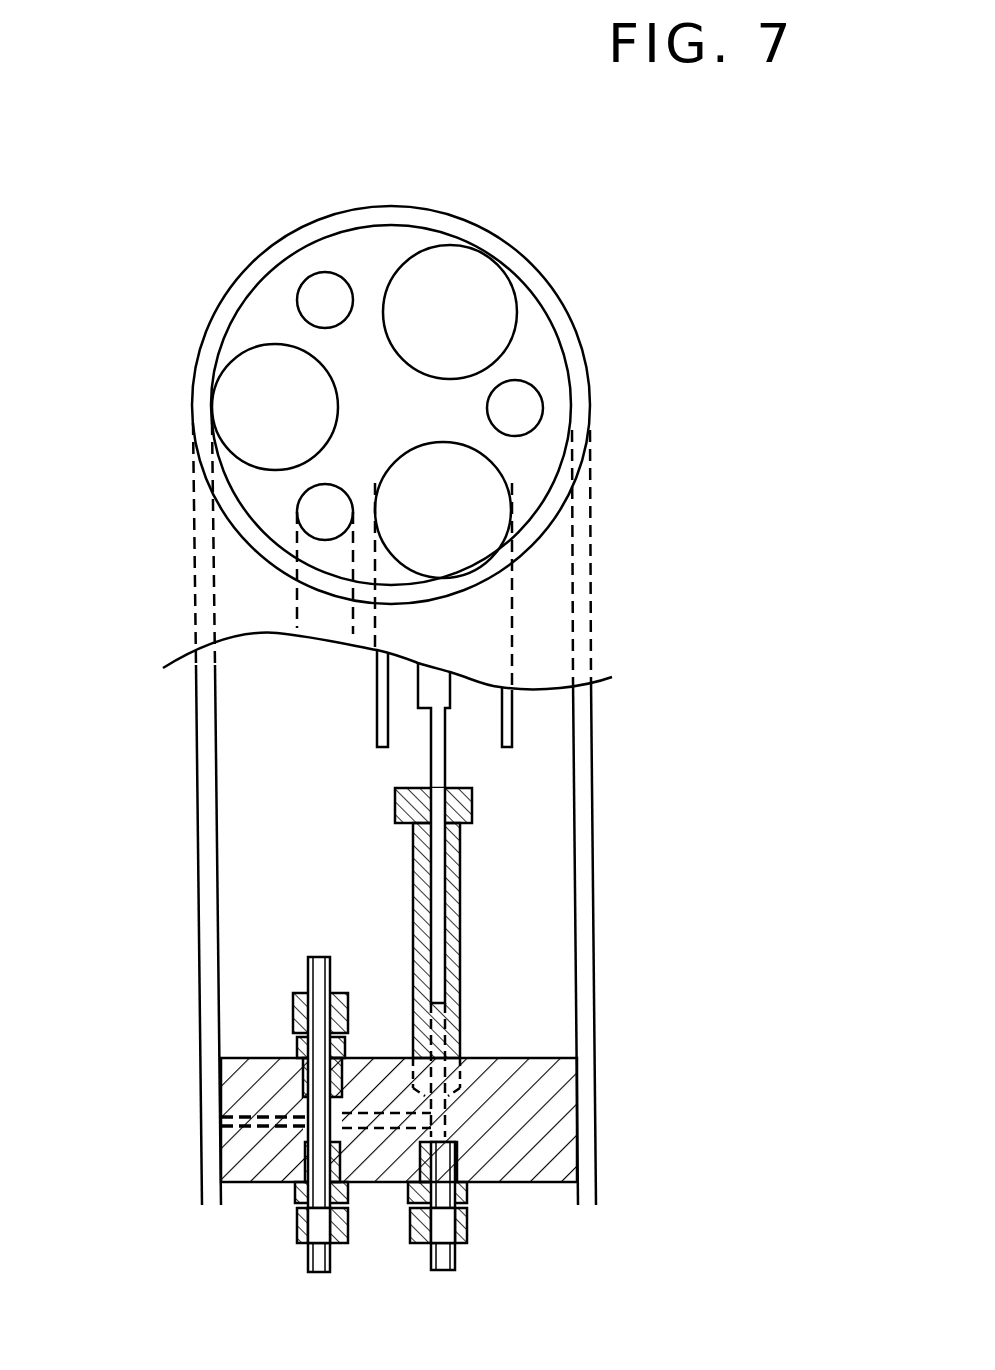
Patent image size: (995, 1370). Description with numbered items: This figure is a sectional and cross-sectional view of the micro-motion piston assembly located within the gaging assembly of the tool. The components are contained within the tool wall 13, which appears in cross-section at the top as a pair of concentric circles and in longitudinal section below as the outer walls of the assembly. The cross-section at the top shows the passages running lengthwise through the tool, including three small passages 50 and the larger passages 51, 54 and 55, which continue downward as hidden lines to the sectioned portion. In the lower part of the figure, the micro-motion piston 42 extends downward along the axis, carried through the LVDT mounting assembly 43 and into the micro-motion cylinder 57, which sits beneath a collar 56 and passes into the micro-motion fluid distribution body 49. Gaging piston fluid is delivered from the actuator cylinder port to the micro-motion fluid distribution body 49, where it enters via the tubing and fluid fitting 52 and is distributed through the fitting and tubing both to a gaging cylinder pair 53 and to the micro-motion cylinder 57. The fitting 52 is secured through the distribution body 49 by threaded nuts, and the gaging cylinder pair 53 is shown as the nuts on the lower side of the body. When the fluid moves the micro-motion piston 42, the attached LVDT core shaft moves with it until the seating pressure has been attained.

The tool wall 13 is at (194, 696).
The micro-motion piston 42 is at (430, 765).
The LVDT mounting assembly 43 is at (515, 722).
The micro-motion fluid distribution body 49 is at (579, 1140).
The small passage tubes 50 is at (297, 300).
The large passage 51 is at (232, 357).
The tubing and fluid fitting 52 is at (293, 1012).
The gaging cylinder pair 53 is at (410, 1238).
The large passage 54 is at (518, 305).
The large passage 55 is at (515, 483).
The collar 56 is at (473, 807).
The micro-motion cylinder 57 is at (461, 907).